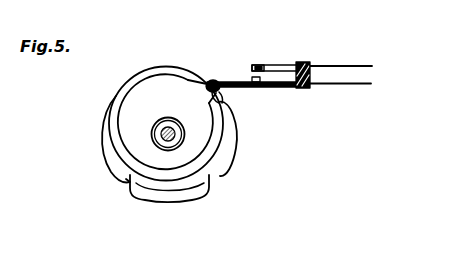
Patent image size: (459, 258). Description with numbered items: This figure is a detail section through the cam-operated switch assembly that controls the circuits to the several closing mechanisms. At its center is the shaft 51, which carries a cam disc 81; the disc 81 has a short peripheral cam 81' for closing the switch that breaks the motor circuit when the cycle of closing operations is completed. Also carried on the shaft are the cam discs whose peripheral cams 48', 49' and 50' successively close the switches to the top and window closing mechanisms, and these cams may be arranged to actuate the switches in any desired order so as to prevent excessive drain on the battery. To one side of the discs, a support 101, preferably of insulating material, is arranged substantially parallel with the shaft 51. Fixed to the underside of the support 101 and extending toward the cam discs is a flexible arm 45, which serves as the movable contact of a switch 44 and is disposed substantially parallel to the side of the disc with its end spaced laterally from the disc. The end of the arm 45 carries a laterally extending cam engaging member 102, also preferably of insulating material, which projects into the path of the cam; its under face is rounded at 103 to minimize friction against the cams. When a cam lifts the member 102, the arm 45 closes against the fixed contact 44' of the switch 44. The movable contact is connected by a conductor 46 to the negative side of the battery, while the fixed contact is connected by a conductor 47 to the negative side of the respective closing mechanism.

The cam disc 81 is at (150, 124).
The shaft 51 is at (169, 127).
The peripheral cam 48' is at (95, 139).
The peripheral cam 50' is at (244, 139).
The peripheral cam 49' is at (169, 199).
The cam engaging member 102 is at (207, 80).
The rounded under face 103 is at (224, 92).
The short peripheral cam 81' is at (204, 119).
The flexible arm 45 is at (279, 87).
The fixed contact 44' is at (274, 53).
The switch 44 is at (235, 59).
The support 101 is at (311, 72).
The conductor 47 is at (372, 67).
The conductor 46 is at (353, 84).